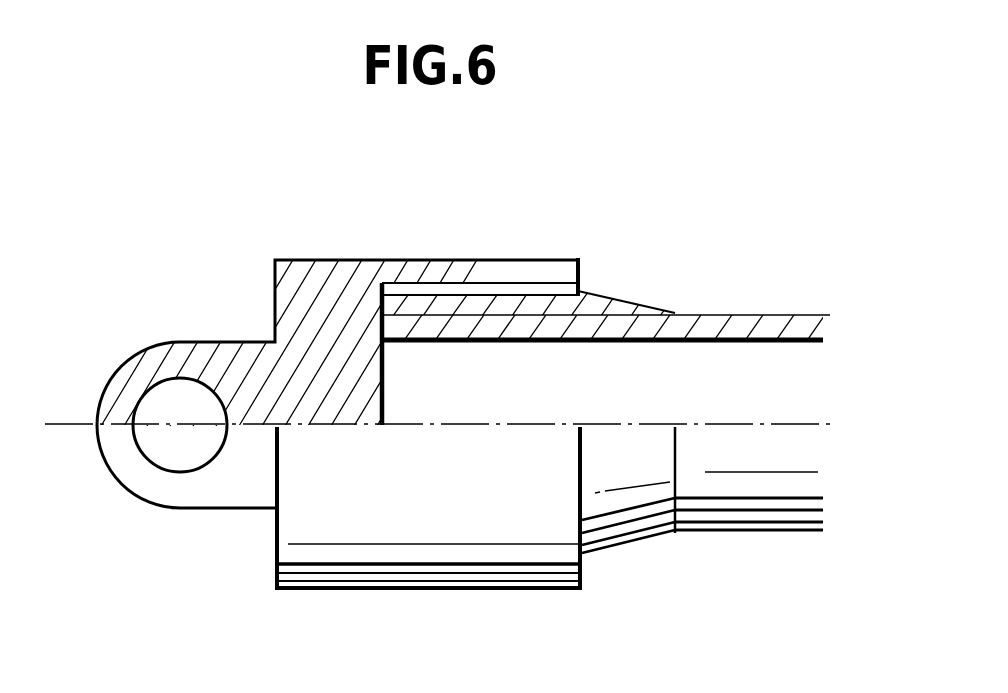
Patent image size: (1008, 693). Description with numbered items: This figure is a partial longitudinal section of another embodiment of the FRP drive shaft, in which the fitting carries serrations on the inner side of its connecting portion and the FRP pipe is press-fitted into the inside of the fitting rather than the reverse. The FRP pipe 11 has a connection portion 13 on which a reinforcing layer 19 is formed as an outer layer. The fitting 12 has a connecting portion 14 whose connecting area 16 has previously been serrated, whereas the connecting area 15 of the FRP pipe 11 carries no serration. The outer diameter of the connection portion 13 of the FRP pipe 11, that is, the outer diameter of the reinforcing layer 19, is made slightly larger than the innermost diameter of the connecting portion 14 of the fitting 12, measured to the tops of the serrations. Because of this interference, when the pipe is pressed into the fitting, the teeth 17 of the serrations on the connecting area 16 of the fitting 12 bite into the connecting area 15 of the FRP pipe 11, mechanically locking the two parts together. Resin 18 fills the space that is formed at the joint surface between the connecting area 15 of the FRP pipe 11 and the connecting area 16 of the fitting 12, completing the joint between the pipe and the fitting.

The FRP pipe 11 is at (783, 326).
The fitting 12 is at (328, 278).
The connection portion 13 is at (555, 322).
The connecting portion 14 is at (497, 266).
The connecting area 15 is at (448, 298).
The connecting area 16 is at (537, 272).
The teeth 17 is at (437, 280).
The resin 18 is at (505, 288).
The reinforcing layer 19 is at (592, 302).